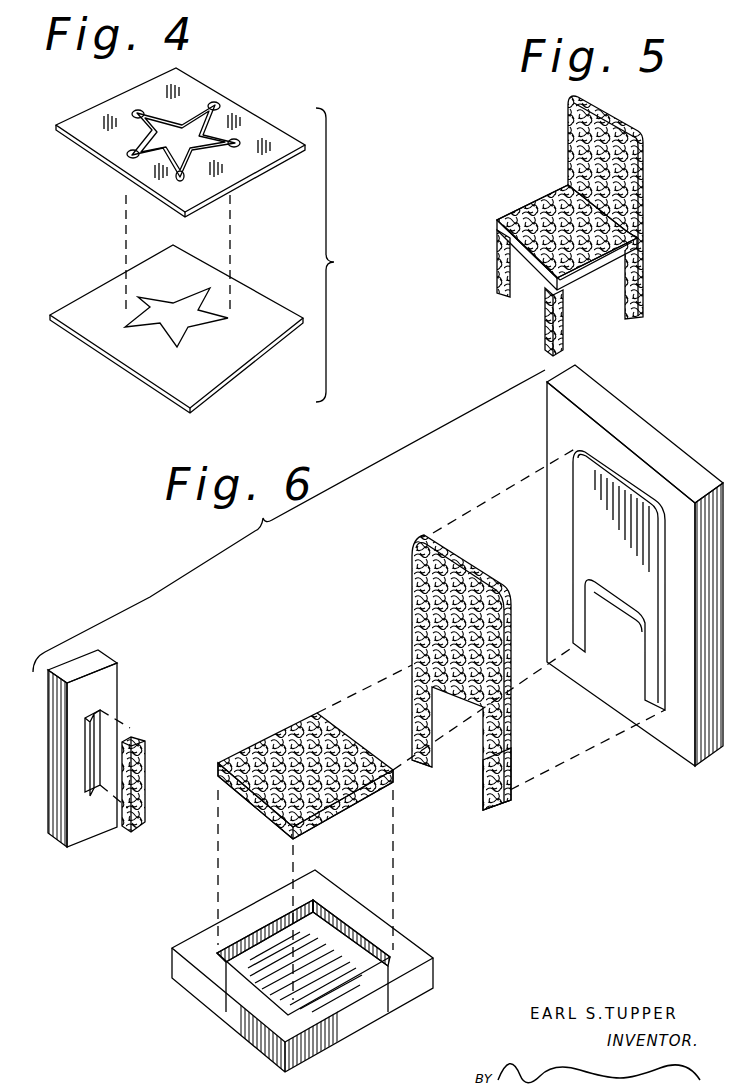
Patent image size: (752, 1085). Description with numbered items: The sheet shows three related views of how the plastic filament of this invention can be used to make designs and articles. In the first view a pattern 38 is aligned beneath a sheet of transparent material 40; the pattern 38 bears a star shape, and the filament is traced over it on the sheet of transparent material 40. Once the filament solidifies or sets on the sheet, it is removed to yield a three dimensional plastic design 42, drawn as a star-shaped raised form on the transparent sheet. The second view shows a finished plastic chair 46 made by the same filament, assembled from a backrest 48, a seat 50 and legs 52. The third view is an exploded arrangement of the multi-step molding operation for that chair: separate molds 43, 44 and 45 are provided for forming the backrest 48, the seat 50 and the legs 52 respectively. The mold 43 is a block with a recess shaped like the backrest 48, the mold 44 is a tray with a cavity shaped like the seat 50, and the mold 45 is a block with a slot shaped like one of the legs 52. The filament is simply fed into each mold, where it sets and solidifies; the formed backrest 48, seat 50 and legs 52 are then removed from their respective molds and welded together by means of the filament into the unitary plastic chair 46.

In FIG. 4, the pattern 38 is at (140, 298).
In FIG. 4, the sheet of transparent material 40 is at (245, 118).
In FIG. 4, the three dimensional plastic design 42 is at (193, 110).
In FIG. 6, the mold 43 is at (645, 428).
In FIG. 6, the mold 44 is at (408, 947).
In FIG. 6, the mold 45 is at (112, 695).
In FIG. 5, the plastic chair 46 is at (622, 199).
In FIG. 5, the backrest 48 is at (642, 192).
In FIG. 6, the backrest 48 is at (484, 575).
In FIG. 5, the seat 50 is at (548, 215).
In FIG. 6, the seat 50 is at (292, 738).
In FIG. 5, the legs 52 is at (493, 275).
In FIG. 6, the legs 52 is at (143, 775).